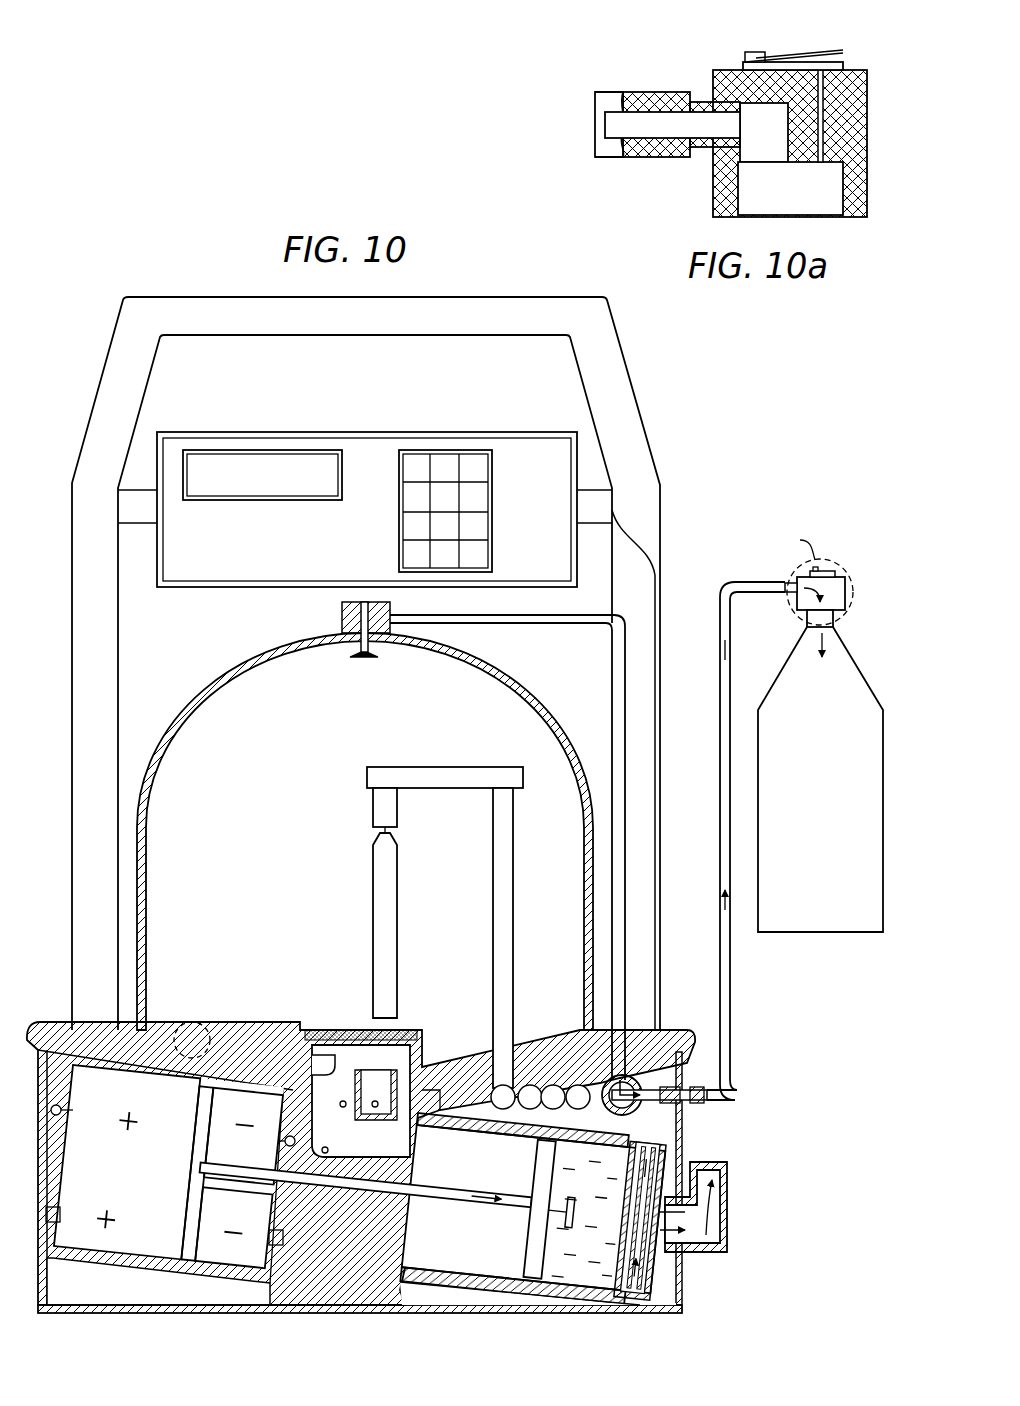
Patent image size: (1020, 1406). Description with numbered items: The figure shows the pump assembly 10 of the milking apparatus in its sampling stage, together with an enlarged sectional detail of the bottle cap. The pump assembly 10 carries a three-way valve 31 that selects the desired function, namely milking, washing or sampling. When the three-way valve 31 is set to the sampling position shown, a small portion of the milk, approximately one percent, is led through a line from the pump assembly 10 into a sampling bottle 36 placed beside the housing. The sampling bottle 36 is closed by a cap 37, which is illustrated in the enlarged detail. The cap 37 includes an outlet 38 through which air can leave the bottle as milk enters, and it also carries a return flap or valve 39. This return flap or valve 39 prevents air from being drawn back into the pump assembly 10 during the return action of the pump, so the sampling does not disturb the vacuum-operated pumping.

In FIG. 10, the pump assembly 10 is at (81, 407).
In FIG. 10, the three-way valve 31 is at (650, 1074).
In FIG. 10, the sampling bottle 36 is at (826, 958).
In FIG. 10, the cap 37 is at (840, 592).
In FIG. 10a, the cap 37 is at (716, 192).
In FIG. 10a, the outlet 38 is at (824, 102).
In FIG. 10a, the return flap or valve 39 is at (794, 62).